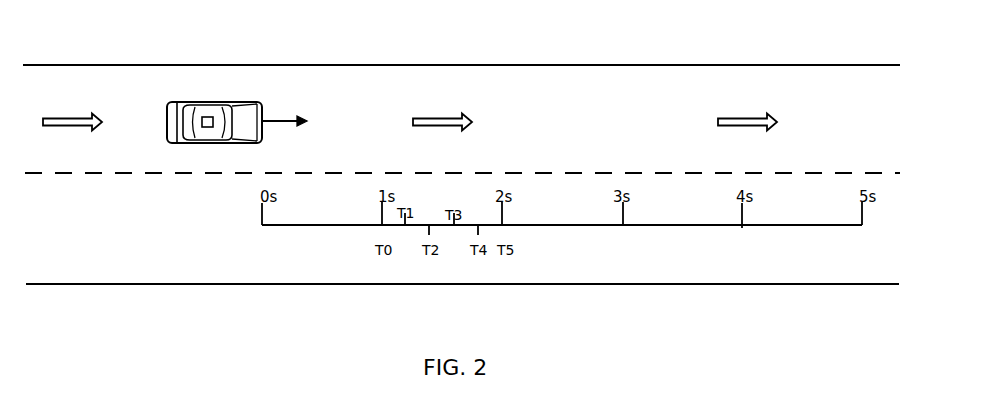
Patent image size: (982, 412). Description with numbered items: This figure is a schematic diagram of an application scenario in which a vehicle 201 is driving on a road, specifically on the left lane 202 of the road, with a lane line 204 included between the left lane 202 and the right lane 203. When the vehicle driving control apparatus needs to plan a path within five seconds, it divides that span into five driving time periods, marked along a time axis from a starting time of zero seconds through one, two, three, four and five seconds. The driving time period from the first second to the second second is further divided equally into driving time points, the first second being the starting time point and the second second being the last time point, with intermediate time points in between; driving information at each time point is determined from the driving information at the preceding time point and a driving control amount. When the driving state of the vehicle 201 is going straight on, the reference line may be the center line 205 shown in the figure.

The vehicle 201 is at (245, 102).
The left lane 202 is at (163, 65).
The right lane 203 is at (93, 284).
The lane line 204 is at (562, 173).
The center line 205 is at (437, 118).